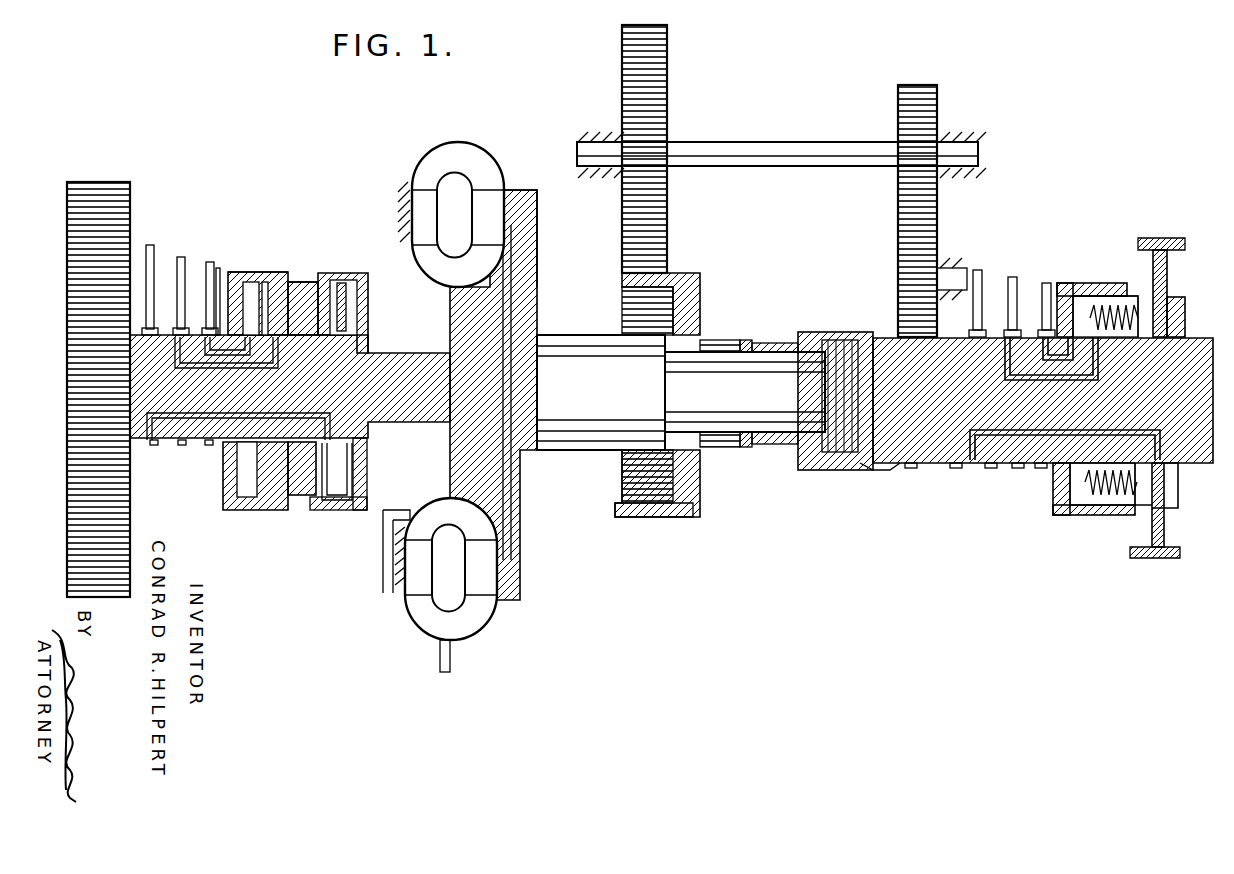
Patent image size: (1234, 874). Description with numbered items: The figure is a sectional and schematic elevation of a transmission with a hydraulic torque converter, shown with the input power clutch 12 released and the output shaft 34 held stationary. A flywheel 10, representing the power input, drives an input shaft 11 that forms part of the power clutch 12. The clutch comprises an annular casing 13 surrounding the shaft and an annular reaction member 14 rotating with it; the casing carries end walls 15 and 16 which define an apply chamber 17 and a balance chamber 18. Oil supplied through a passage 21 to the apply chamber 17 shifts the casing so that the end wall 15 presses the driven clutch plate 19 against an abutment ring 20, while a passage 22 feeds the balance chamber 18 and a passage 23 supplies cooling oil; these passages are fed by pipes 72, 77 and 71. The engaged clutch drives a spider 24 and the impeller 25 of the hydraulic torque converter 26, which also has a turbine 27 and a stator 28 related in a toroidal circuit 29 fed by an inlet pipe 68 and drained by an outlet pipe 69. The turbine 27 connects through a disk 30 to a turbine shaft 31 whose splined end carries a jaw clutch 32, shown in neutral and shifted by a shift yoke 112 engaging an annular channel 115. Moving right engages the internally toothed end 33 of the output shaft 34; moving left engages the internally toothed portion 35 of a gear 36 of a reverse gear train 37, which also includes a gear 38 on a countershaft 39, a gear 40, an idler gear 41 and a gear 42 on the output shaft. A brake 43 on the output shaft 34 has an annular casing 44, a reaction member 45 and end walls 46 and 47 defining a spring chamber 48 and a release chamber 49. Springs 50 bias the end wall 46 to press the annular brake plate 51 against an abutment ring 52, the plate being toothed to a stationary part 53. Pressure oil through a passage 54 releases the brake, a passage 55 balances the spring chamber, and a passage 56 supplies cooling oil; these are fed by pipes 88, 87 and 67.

The flywheel 10 is at (82, 182).
The input shaft 11 is at (190, 445).
The input power clutch 12 is at (283, 249).
The annular casing 13 is at (242, 272).
The annular reaction member 14 is at (264, 282).
The annular end wall 15 is at (300, 284).
The annular end wall 16 is at (218, 268).
The apply chamber 17 is at (268, 510).
The balance chamber 18 is at (246, 497).
The driven clutch plate 19 is at (310, 495).
The abutment ring 20 is at (344, 506).
The passage 21 is at (268, 362).
The passage 22 is at (229, 356).
The passage 23 is at (163, 442).
The spider 24 is at (350, 273).
The impeller 25 is at (488, 238).
The hydraulic torque converter 26 is at (459, 130).
The turbine 27 is at (490, 200).
The stator 28 is at (412, 199).
The toroidal circuit 29 is at (480, 160).
The disk 30 is at (518, 273).
The turbine shaft 31 is at (595, 393).
The jaw clutch 32 is at (763, 450).
The coupling 33 is at (820, 470).
The output shaft 34 is at (940, 465).
The internally toothed portion 35 is at (720, 448).
The gear 36 is at (668, 517).
The reverse gear train 37 is at (812, 131).
The gear 38 is at (668, 233).
The countershaft 39 is at (770, 168).
The gear 40 is at (937, 193).
The idler gear 41 is at (937, 246).
The gear 42 is at (893, 471).
The brake 43 is at (1090, 258).
The annular casing 44 is at (1106, 283).
The annular reaction member 45 is at (1068, 284).
The annular end wall 46 is at (1168, 278).
The annular end wall 47 is at (1053, 488).
The spring chamber 48 is at (1098, 497).
The release chamber 49 is at (1058, 515).
The springs 50 is at (1125, 510).
The annular brake plate 51 is at (1165, 521).
The abutment ring 52 is at (1178, 495).
The stationary part 53 is at (1160, 558).
The passage 54 is at (1060, 362).
The passage 55 is at (1097, 378).
The passage 56 is at (1008, 430).
The pipe 67 is at (983, 275).
The inlet pipe 68 is at (383, 580).
The outlet pipe 69 is at (452, 662).
The pipe 71 is at (150, 245).
The pipe 72 is at (181, 257).
The pipe 77 is at (210, 262).
The pipe 87 is at (1008, 306).
The pipe 88 is at (1042, 306).
The shift yoke 112 is at (769, 340).
The annular channel 115 is at (782, 342).